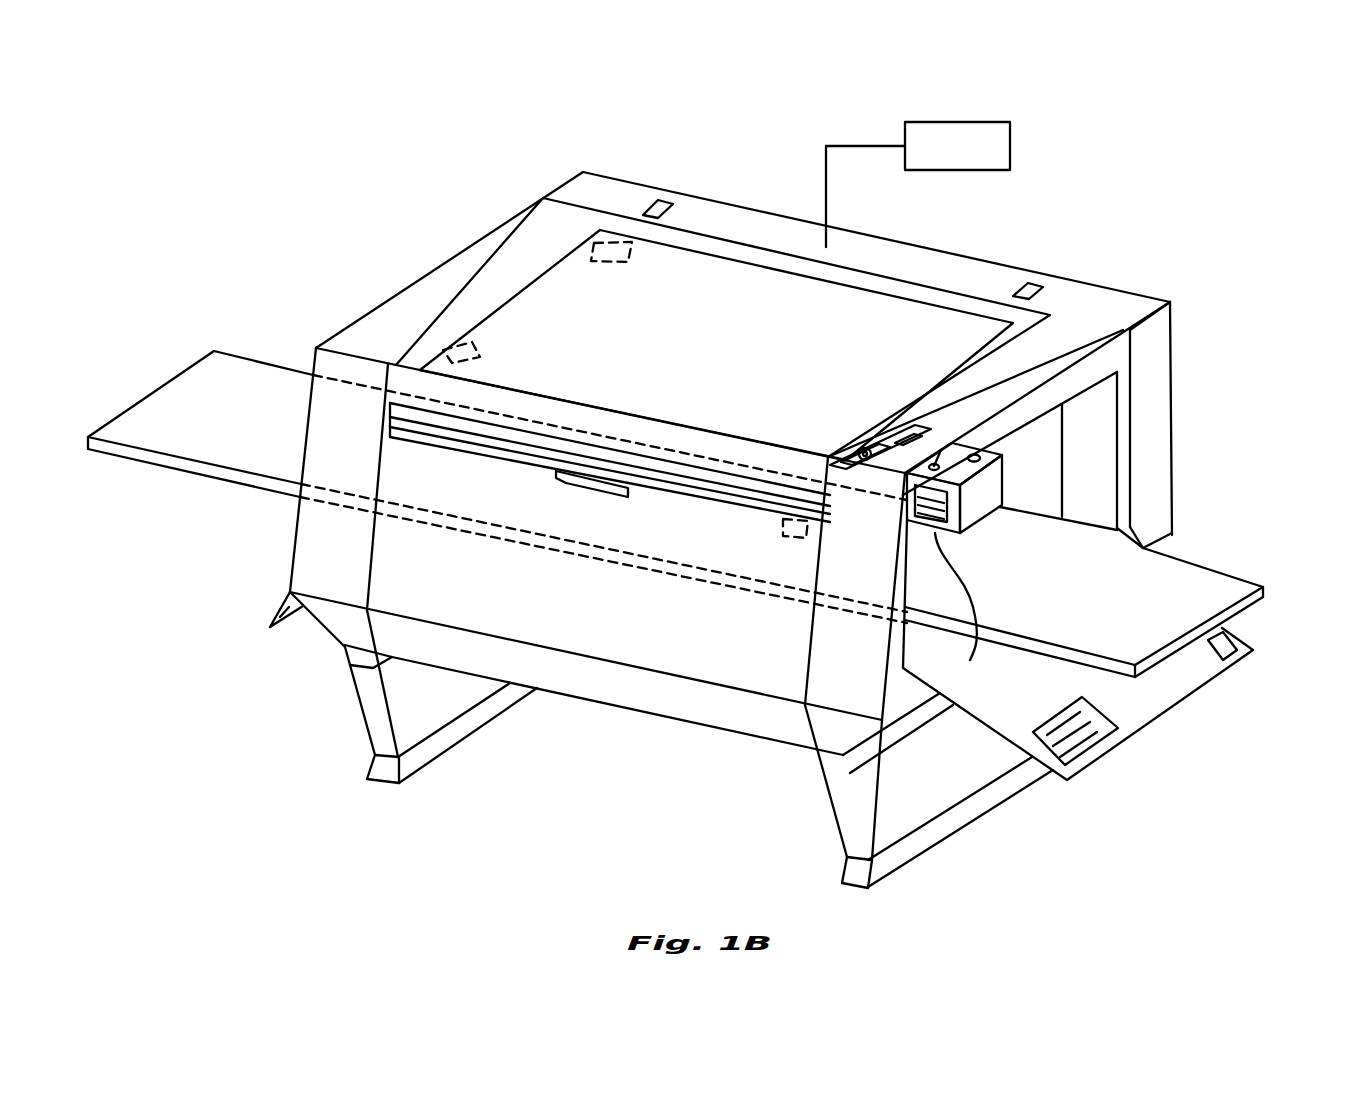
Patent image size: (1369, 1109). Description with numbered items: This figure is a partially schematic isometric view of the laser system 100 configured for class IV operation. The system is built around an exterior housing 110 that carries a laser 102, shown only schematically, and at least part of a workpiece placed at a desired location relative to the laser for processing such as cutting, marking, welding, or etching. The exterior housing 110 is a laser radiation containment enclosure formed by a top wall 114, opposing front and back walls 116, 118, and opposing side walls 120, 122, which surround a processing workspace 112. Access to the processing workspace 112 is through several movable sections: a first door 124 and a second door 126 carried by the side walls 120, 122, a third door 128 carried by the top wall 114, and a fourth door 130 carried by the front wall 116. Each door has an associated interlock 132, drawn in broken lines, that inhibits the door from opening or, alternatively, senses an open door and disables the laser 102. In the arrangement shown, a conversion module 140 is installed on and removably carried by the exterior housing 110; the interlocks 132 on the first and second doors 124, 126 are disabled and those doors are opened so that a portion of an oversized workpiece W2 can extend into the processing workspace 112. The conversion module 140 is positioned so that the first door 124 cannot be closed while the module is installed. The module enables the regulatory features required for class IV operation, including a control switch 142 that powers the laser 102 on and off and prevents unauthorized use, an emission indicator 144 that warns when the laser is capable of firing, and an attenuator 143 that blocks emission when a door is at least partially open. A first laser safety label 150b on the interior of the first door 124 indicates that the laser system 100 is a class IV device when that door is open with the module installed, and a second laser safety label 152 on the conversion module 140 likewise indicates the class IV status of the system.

The laser system 100 is at (1143, 154).
The laser 102 is at (982, 122).
The exterior housing 110 is at (1090, 296).
The processing workspace 112 is at (1012, 495).
The top wall 114 is at (878, 290).
The front wall 116 is at (600, 674).
The back wall 118 is at (1176, 326).
The side wall 120 is at (1122, 496).
The side wall 122 is at (306, 358).
The first door 124 is at (1167, 687).
The second door 126 is at (283, 620).
The third door 128 is at (927, 315).
The fourth door 130 is at (747, 663).
The interlock 132 is at (487, 345).
The conversion module 140 is at (990, 475).
The control switch 142 is at (943, 455).
The attenuator 143 is at (604, 243).
The emission indicator 144 is at (977, 452).
The first laser safety label 150b is at (1107, 717).
The second laser safety label 152 is at (962, 611).
The oversized workpiece W2 is at (1243, 575).